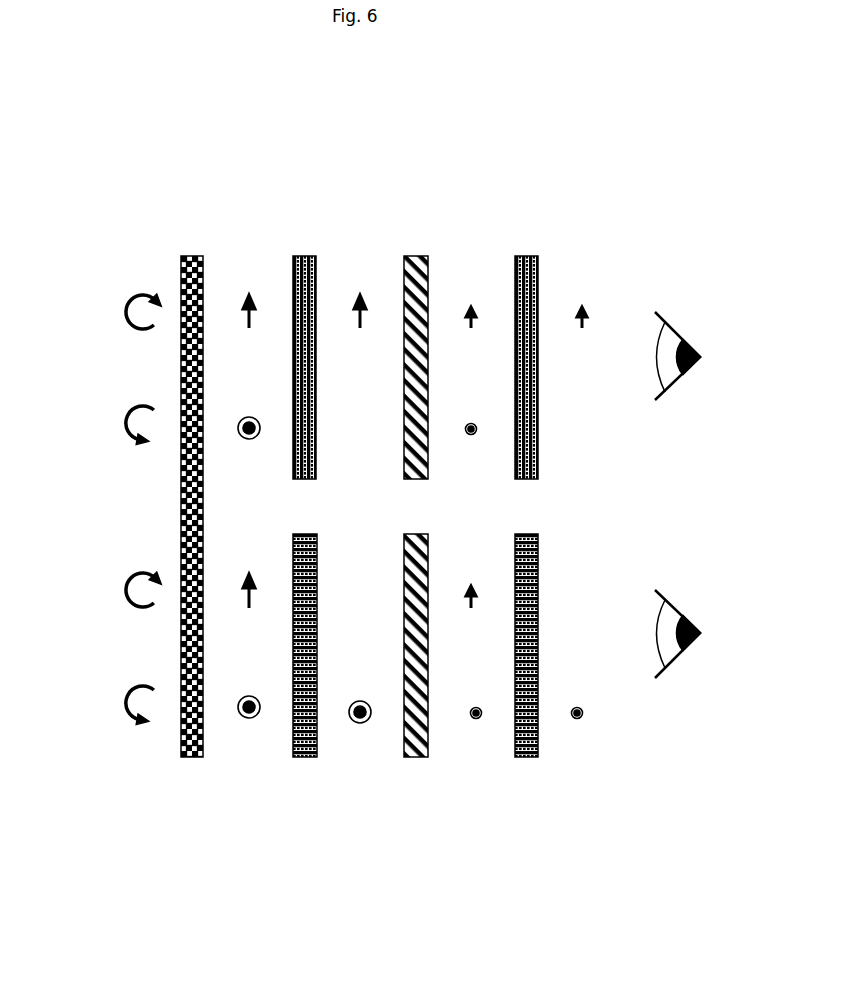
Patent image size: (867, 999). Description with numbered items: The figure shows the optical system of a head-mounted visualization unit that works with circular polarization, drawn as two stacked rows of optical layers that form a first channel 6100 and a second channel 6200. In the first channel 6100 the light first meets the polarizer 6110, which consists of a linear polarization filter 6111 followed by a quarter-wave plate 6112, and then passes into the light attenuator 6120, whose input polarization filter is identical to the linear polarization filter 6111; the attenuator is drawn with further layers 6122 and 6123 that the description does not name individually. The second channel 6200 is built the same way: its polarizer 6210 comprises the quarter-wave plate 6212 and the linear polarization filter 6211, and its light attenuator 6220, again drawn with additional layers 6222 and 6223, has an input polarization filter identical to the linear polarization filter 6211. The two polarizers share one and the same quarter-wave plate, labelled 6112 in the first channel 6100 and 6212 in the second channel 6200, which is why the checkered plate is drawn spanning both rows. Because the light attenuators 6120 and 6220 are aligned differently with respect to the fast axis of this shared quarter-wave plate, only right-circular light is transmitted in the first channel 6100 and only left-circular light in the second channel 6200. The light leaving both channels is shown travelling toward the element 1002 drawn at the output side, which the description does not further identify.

The viewer eyes 1002 is at (700, 357).
The first channel 6100 is at (108, 369).
The second channel 6200 is at (108, 648).
The polarizer 6110 is at (315, 205).
The linear polarization filter 6111 is at (303, 256).
The quarter-wave plate 6112 is at (192, 256).
The light attenuator 6120 is at (280, 180).
The retarder 6122 is at (413, 256).
The second polarizer 6123 is at (525, 256).
The polarizer 6210 is at (315, 790).
The linear polarization filter 6211 is at (303, 757).
The quarter-wave plate 6212 is at (192, 757).
The light attenuator 6220 is at (280, 815).
The retarder in second mode 6222 is at (413, 757).
The second polarizer in second mode 6223 is at (525, 757).